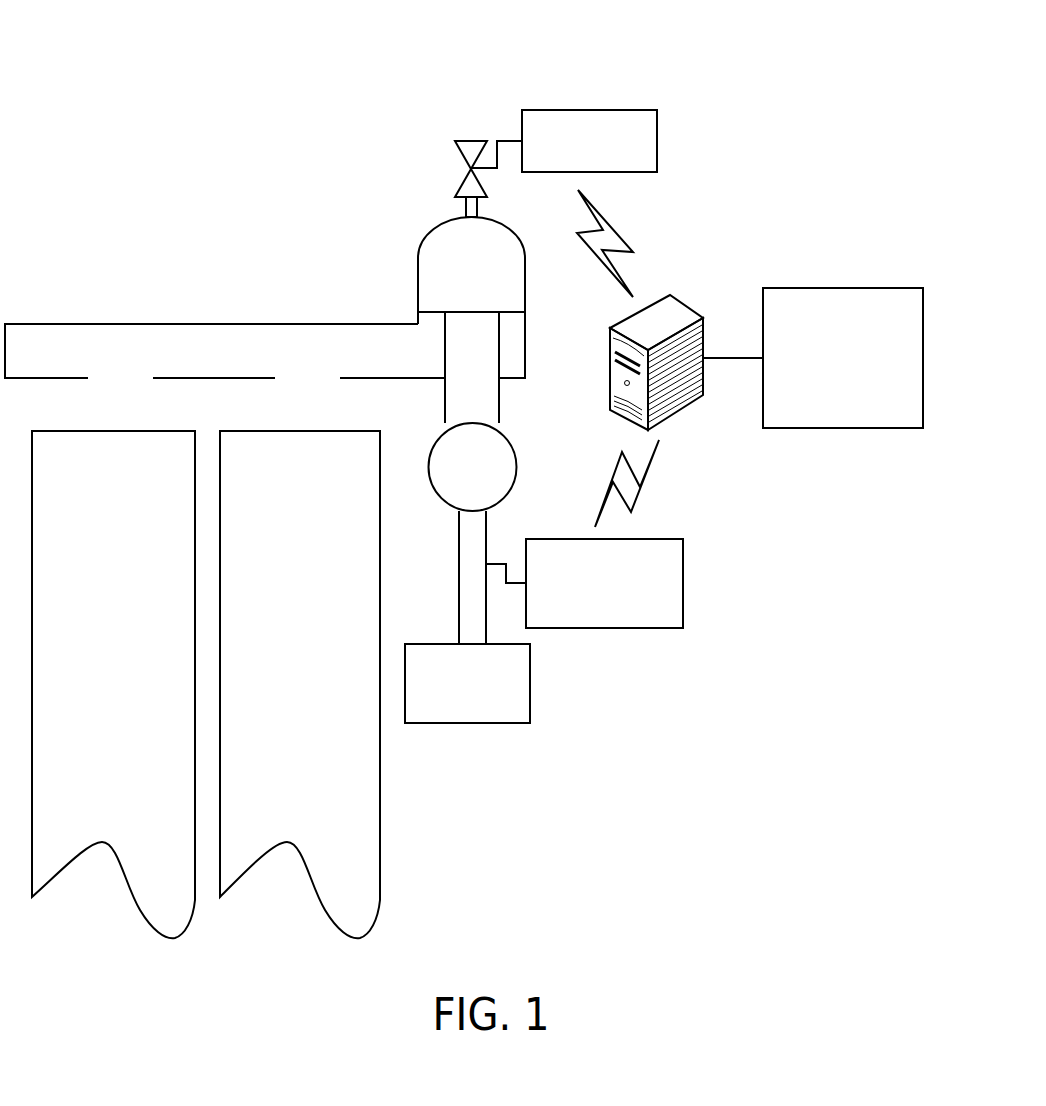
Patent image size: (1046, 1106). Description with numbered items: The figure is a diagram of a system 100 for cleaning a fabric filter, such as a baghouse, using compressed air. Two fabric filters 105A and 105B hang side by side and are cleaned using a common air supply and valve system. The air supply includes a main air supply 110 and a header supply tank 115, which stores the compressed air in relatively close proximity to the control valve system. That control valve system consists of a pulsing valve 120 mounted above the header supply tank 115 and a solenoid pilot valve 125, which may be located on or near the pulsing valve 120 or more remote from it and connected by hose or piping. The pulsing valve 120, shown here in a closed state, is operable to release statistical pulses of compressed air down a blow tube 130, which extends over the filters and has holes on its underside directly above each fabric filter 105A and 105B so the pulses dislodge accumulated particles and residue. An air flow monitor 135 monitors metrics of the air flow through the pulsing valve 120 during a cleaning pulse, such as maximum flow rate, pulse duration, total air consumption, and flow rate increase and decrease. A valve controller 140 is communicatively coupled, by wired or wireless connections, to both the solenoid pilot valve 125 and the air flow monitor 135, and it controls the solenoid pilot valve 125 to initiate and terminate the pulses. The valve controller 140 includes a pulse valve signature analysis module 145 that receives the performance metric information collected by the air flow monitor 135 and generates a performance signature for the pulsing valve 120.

The system 100 is at (216, 75).
The fabric filter 105A is at (113, 684).
The fabric filter 105B is at (300, 684).
The main air supply 110 is at (467, 683).
The header supply tank 115 is at (516, 466).
The pulsing valve 120 is at (418, 280).
The solenoid pilot valve 125 is at (556, 153).
The blow tube 130 is at (200, 323).
The air flow monitor 135 is at (584, 583).
The valve controller 140 is at (685, 304).
The pulse valve signature analysis module 145 is at (843, 358).